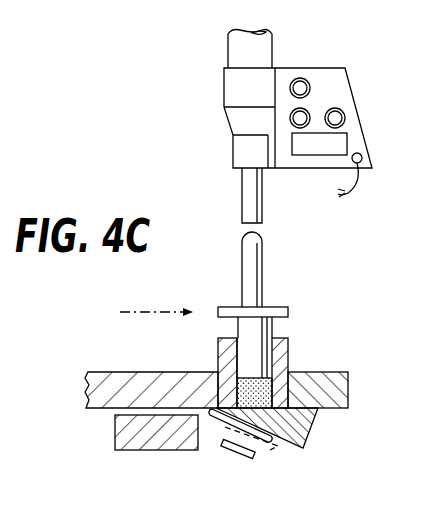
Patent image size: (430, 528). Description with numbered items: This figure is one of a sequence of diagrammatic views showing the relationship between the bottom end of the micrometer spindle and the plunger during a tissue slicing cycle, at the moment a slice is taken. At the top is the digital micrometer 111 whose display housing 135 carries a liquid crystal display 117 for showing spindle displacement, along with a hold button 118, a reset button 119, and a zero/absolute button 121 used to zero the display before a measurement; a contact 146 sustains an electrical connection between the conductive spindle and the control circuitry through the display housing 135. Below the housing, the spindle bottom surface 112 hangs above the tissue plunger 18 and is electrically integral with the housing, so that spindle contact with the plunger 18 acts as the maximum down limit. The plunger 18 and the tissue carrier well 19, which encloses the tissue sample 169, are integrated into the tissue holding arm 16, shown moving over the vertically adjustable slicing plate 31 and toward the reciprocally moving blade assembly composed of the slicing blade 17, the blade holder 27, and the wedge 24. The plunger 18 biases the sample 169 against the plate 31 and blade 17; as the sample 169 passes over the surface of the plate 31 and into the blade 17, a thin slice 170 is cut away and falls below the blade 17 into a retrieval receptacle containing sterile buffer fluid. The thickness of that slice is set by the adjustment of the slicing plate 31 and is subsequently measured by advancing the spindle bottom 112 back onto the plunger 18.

The digital micrometer 111 is at (230, 45).
The display housing 135 is at (340, 62).
The hold button 118 is at (298, 77).
The reset button 119 is at (304, 116).
The zero/absolute button 121 is at (346, 116).
The liquid crystal display 117 is at (348, 135).
The contact 146 is at (352, 198).
The spindle bottom surface 112 is at (258, 226).
The tissue plunger 18 is at (262, 275).
The tissue carrier well 19 is at (293, 340).
The tissue sample 169 is at (262, 393).
The tissue holding arm 16 is at (143, 370).
The adjustable slicing plate 31 is at (118, 430).
The wedge 24 is at (319, 433).
The slicing blade 17 is at (214, 412).
The thin slice 170 is at (237, 457).
The blade holder 27 is at (269, 452).